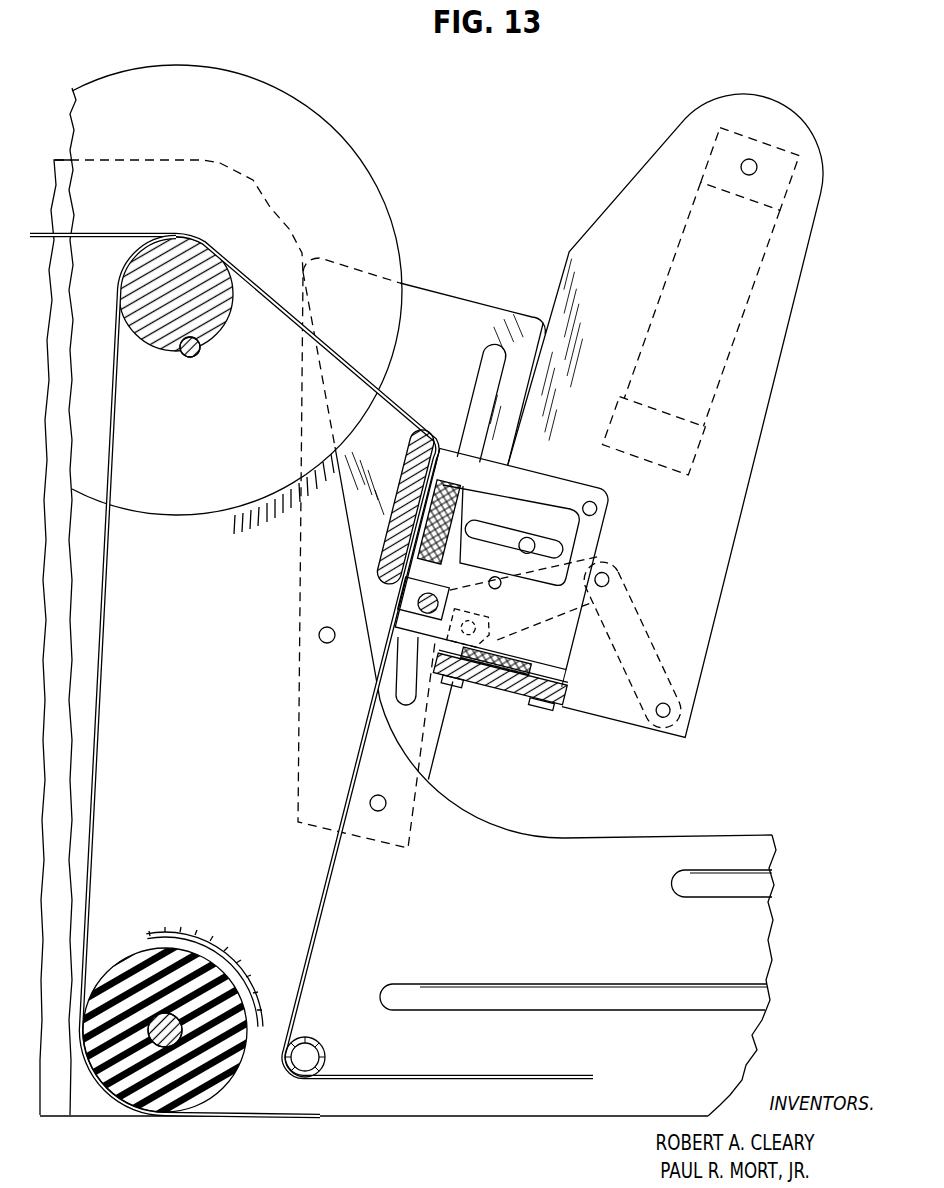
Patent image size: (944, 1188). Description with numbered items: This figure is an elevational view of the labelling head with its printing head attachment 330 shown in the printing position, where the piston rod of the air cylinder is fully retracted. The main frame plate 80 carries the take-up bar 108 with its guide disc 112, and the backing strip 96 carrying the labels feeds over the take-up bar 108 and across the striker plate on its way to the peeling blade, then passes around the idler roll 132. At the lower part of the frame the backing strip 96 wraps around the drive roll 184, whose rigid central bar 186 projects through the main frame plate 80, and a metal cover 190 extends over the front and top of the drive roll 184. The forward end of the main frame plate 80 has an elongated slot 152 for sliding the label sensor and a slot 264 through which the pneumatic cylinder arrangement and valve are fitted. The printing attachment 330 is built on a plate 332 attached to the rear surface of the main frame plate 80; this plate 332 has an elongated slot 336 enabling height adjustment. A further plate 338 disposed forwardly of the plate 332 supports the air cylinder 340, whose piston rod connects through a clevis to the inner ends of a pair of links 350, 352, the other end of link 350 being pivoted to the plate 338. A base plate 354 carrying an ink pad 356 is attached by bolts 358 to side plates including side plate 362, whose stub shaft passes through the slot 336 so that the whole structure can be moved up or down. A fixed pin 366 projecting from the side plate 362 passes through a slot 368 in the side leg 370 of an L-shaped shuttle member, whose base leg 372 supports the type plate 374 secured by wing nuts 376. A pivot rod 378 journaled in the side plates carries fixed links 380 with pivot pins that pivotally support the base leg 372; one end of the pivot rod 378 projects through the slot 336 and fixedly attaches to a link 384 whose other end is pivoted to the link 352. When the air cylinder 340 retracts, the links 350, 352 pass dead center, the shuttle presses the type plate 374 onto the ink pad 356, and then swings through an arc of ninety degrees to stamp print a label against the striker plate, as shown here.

The main frame plate 80 is at (534, 909).
The backing strip 96 is at (92, 856).
The take-up bar 108 is at (160, 326).
The guide disc 112 is at (338, 159).
The idler roll 132 is at (327, 1053).
The elongated slot 152 is at (467, 985).
The drive roll 184 is at (231, 1085).
The central bar 186 is at (154, 1052).
The metal cover 190 is at (230, 953).
The slot 264 is at (714, 889).
The printing head attachment 330 is at (538, 267).
The plate 332 is at (406, 305).
The elongated slot 336 is at (487, 352).
The plate 338 is at (682, 148).
The air cylinder 340 is at (687, 390).
The link 350 is at (640, 628).
The link 352 is at (560, 606).
The base plate 354 is at (511, 701).
The ink pad 356 is at (480, 690).
The bolts 358 is at (541, 712).
The side plate 362 is at (573, 491).
The fixed pin 366 is at (554, 540).
The slot 368 is at (487, 528).
The side leg 370 is at (517, 503).
The base leg 372 is at (445, 475).
The type plate 374 is at (430, 444).
The wing nuts 376 is at (506, 580).
The pivot rod 378 is at (422, 607).
The fixed links 380 is at (427, 588).
The link 384 is at (417, 687).